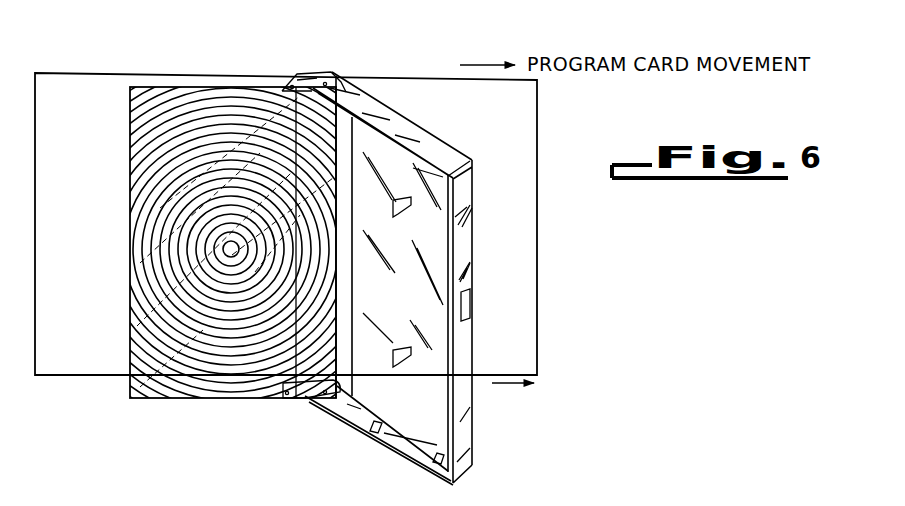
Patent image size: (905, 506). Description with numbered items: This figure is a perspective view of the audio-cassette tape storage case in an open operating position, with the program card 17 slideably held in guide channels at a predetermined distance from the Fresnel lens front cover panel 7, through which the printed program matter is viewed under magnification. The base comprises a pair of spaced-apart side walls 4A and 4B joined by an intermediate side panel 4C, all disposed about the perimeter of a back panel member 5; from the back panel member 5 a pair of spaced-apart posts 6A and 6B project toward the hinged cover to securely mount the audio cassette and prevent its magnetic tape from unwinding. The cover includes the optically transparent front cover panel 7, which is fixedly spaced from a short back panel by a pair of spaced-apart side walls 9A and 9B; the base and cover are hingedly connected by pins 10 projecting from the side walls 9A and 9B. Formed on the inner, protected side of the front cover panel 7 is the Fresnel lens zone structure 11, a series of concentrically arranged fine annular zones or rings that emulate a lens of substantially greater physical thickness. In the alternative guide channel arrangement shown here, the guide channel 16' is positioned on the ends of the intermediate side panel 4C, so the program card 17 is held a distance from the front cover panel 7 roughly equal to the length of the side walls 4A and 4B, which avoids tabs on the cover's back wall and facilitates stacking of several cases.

The program card 17 is at (115, 73).
The Fresnel lens zone structure 11 is at (201, 335).
The optically transparent front cover panel 7 is at (182, 110).
The side wall 9A is at (313, 79).
The side wall 9B is at (301, 401).
The side wall 4A is at (367, 98).
The side wall 4B is at (384, 429).
The intermediate side panel 4C is at (464, 283).
The back panel member 5 is at (390, 301).
The pins 10 is at (327, 505).
The post 6A is at (400, 215).
The post 6B is at (401, 362).
The guide channel 16' is at (515, 291).